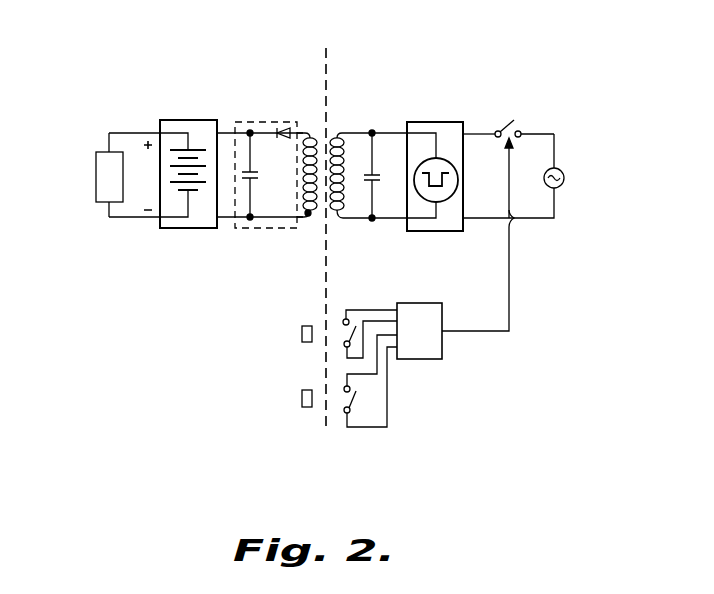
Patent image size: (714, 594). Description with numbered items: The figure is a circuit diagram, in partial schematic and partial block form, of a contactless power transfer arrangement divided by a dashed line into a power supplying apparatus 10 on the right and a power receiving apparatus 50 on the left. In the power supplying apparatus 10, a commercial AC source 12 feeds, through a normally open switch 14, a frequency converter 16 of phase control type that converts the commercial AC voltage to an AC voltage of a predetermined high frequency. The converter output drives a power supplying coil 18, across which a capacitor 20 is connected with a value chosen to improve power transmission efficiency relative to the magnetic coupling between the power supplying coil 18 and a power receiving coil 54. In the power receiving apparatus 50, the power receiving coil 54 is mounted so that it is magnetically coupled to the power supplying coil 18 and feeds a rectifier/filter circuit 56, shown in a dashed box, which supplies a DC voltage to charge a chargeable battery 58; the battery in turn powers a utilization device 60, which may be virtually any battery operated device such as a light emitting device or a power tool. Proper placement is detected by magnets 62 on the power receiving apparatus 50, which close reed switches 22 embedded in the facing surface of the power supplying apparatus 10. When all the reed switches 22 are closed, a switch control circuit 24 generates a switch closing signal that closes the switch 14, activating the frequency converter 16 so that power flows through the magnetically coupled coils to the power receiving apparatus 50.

The power supplying apparatus 10 is at (333, 65).
The commercial AC source 12 is at (564, 178).
The normally open switch 14 is at (514, 120).
The frequency converter 16 is at (442, 122).
The power supplying coil 18 is at (344, 176).
The capacitor 20 is at (376, 173).
The reed switches 22 is at (342, 320).
The switch control circuit 24 is at (421, 308).
The power receiving apparatus 50 is at (318, 65).
The power receiving coil 54 is at (310, 215).
The rectifier/filter circuit 56 is at (263, 228).
The chargeable battery 58 is at (190, 229).
The utilization device 60 is at (96, 161).
The magnets 62 is at (302, 333).